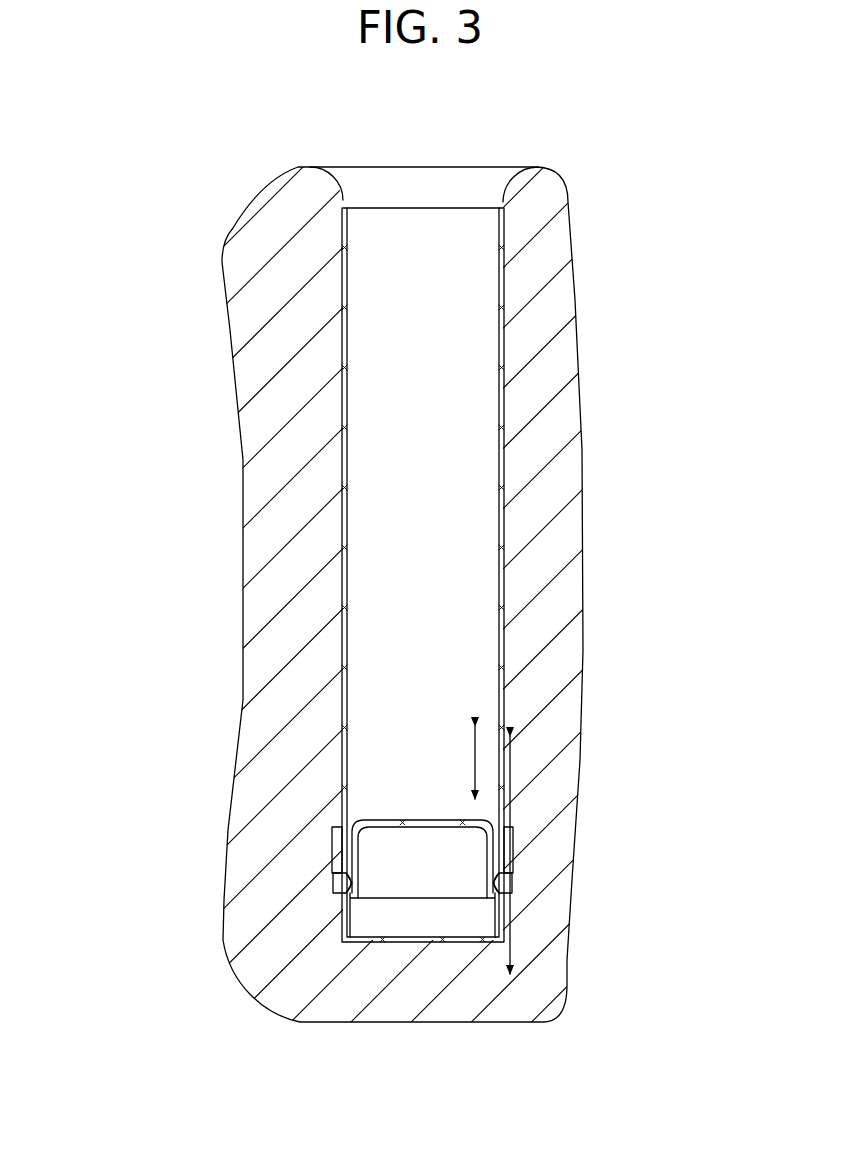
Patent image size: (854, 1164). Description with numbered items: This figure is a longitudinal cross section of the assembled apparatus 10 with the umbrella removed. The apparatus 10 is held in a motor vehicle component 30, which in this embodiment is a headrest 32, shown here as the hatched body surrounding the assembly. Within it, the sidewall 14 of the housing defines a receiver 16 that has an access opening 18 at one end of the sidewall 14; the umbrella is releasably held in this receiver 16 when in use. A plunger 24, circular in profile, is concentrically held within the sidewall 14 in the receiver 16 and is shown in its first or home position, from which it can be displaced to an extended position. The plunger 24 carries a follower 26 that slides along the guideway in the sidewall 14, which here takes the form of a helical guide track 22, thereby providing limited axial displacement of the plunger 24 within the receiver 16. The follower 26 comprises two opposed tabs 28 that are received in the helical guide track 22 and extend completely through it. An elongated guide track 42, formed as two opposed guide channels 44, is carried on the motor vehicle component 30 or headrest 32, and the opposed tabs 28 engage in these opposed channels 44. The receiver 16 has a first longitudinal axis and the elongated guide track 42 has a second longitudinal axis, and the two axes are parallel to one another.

The apparatus 10 is at (175, 178).
The sidewall 14 is at (505, 392).
The receiver 16 is at (468, 300).
The access opening 18 is at (430, 208).
The helical guide track 22 is at (334, 874).
The plunger 24 is at (403, 818).
The follower 26 is at (532, 917).
The opposed tabs 28 is at (333, 884).
The motor vehicle component 30 is at (623, 532).
The headrest 32 is at (578, 640).
The elongated guide track 42 is at (325, 838).
The opposed guide channels 44 is at (333, 863).